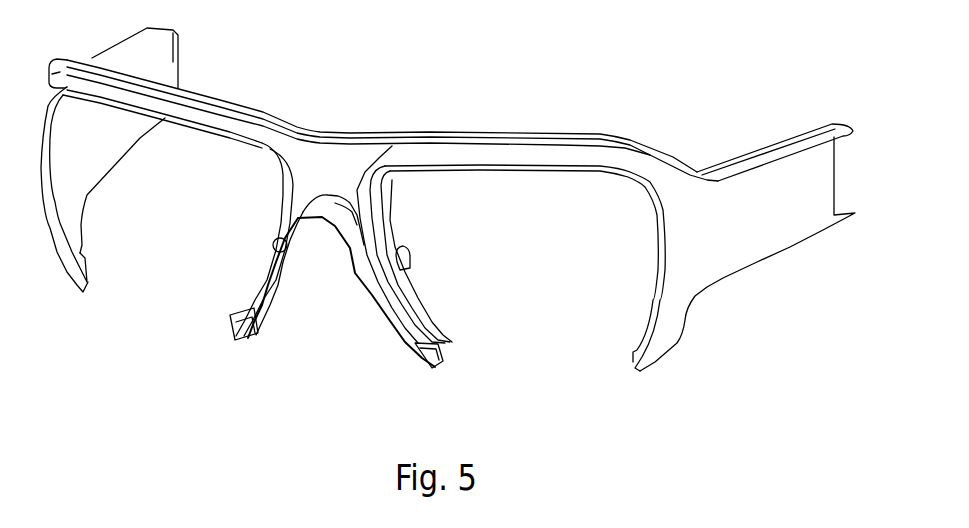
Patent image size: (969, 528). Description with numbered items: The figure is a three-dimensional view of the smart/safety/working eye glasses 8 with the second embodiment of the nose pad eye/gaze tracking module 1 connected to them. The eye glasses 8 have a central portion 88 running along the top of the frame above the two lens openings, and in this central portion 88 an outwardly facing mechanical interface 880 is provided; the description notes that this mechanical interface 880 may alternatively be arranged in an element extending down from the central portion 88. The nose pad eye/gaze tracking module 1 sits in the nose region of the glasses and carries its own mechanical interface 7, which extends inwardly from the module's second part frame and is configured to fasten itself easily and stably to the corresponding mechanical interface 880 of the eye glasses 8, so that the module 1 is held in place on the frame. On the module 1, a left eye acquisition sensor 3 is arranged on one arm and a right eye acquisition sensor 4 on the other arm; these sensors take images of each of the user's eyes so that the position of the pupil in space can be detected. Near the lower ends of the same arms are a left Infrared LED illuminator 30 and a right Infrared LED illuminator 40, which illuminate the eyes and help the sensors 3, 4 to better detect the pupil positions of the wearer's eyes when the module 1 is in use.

The nose pad eye/gaze tracking module 1 is at (240, 267).
The left eye acquisition sensor 3 is at (273, 243).
The right eye acquisition sensor 4 is at (410, 262).
The mechanical interface 7 is at (313, 162).
The smart/safety/working eye glasses 8 is at (233, 112).
The central portion 88 is at (315, 138).
The mechanical interface 880 is at (277, 163).
The left Infrared LED illuminator 30 is at (230, 320).
The right Infrared LED illuminator 40 is at (435, 343).